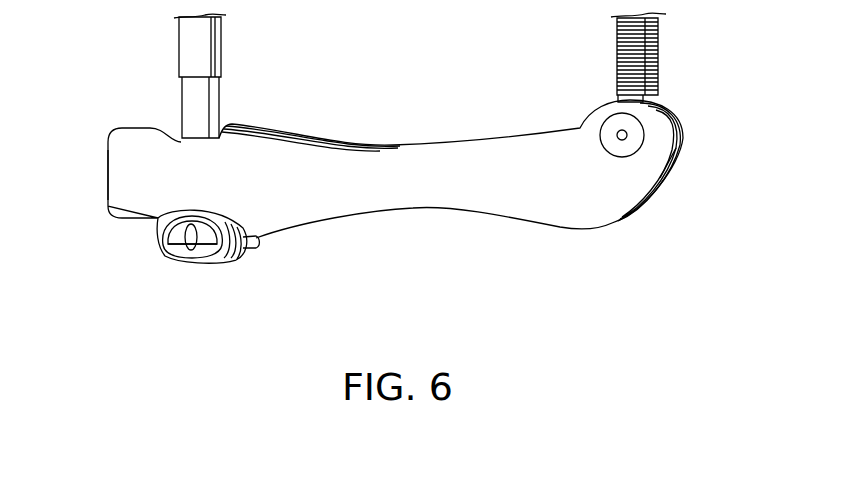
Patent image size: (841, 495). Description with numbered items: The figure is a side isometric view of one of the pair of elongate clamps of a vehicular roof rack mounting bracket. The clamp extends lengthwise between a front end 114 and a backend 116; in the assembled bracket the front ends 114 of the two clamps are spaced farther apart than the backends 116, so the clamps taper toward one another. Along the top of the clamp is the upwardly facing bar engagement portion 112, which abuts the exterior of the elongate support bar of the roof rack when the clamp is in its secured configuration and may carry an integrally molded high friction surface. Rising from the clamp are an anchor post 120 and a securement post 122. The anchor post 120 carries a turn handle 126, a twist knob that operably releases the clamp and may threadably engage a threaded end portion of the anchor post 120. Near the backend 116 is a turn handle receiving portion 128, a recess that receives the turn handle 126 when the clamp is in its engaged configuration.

The upwardly facing bar engagement portion 112 is at (397, 142).
The front end 114 is at (652, 190).
The backend 116 is at (108, 172).
The anchor post 120 is at (179, 58).
The securement post 122 is at (657, 47).
The turn handle 126 is at (163, 257).
The turn handle receiving portion 128 is at (160, 228).